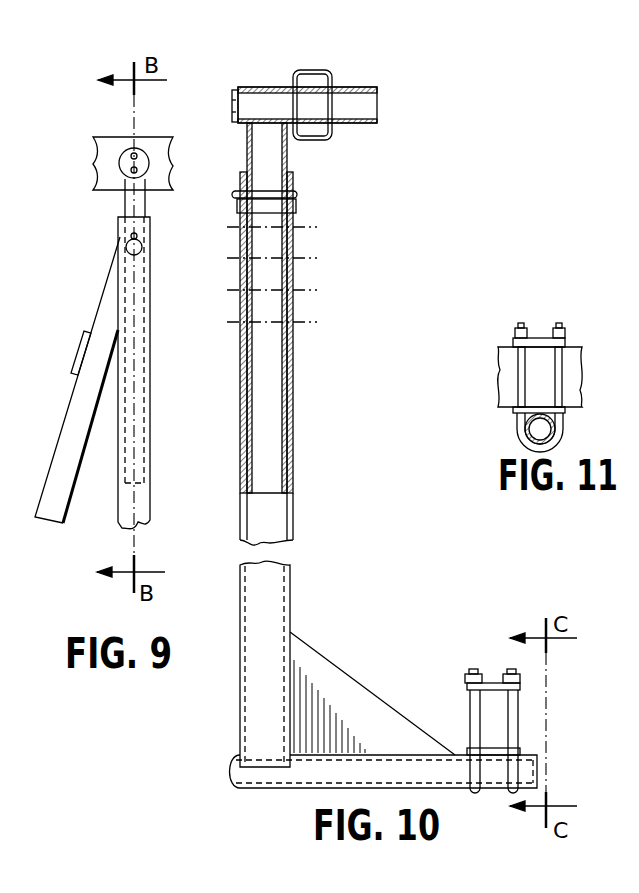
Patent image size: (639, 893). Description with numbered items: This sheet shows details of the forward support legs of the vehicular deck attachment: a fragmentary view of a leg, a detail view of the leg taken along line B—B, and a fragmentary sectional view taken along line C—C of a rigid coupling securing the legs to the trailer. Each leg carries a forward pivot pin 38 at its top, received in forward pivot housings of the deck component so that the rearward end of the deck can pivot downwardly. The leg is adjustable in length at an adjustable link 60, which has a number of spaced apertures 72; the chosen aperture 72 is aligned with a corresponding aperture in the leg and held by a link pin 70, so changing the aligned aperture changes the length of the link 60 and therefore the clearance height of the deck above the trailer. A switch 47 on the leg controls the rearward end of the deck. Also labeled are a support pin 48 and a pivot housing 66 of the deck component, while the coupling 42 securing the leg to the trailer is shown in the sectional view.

In FIG. 10, the forward pivot pin 38 is at (278, 88).
In FIG. 10, the U-bolt clamp 42 is at (495, 700).
In FIG. 11, the U-bolt clamp 42 is at (540, 333).
In FIG. 9, the switch 47 is at (78, 348).
In FIG. 9, the support pin 48 is at (0, 150).
In FIG. 9, the adjustable link 60 is at (145, 378).
In FIG. 10, the adjustable link 60 is at (292, 390).
In FIG. 9, the pivot housing 66 is at (2, 78).
In FIG. 9, the link pin 70 is at (120, 236).
In FIG. 10, the link pin 70 is at (298, 195).
In FIG. 10, the spaced aperture 72 is at (317, 322).